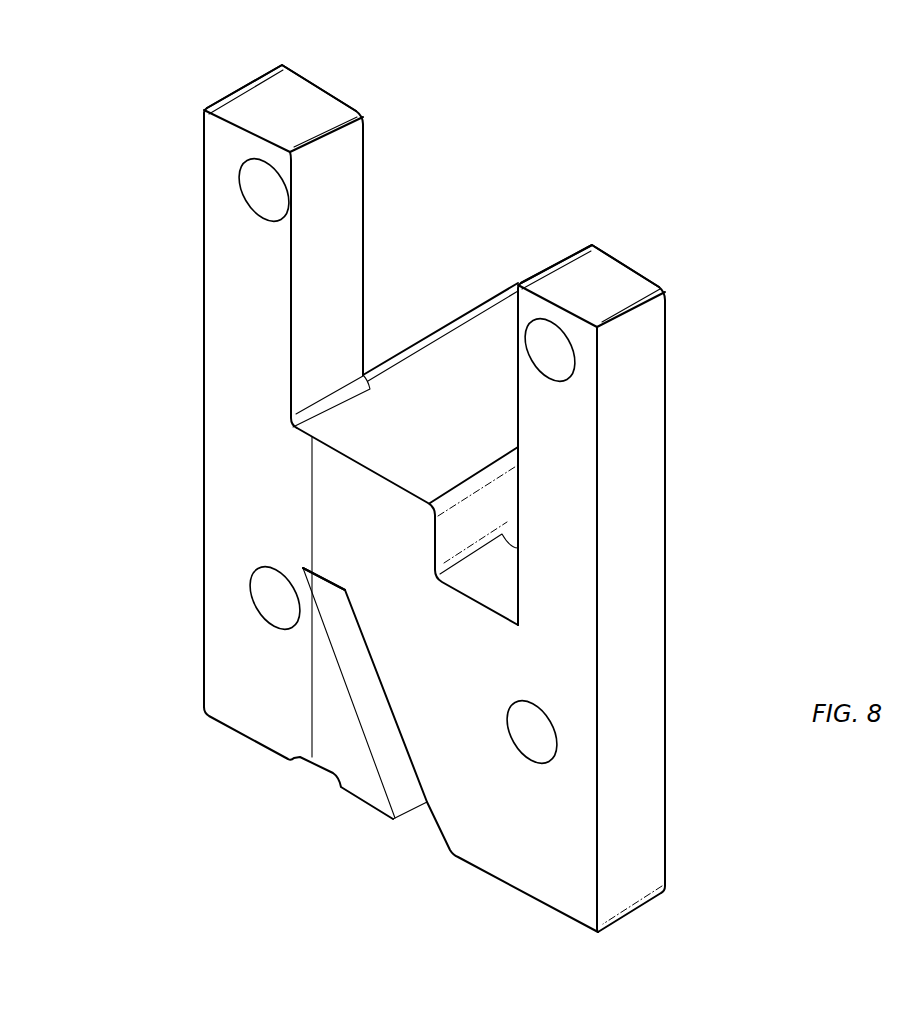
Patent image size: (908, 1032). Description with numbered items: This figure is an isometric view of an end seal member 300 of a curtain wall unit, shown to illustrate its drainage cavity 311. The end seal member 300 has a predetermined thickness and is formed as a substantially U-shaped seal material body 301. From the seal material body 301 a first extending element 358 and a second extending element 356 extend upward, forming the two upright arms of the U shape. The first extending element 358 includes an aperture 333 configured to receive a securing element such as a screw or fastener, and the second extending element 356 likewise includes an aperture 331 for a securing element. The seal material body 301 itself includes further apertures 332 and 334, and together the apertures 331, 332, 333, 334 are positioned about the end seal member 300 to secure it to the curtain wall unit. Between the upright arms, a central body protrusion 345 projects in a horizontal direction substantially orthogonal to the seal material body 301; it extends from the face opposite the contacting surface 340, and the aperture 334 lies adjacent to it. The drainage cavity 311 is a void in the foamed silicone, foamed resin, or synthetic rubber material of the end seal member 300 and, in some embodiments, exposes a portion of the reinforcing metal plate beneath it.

The end seal member 300 is at (562, 87).
The seal material body 301 is at (434, 498).
The drainage cavity 311 is at (378, 737).
The aperture 331 is at (250, 188).
The aperture 332 is at (265, 580).
The aperture 333 is at (533, 345).
The aperture 334 is at (535, 728).
The contacting surface 340 is at (432, 727).
The central body protrusion 345 is at (440, 348).
The second extending element 356 is at (595, 280).
The first extending element 358 is at (285, 103).